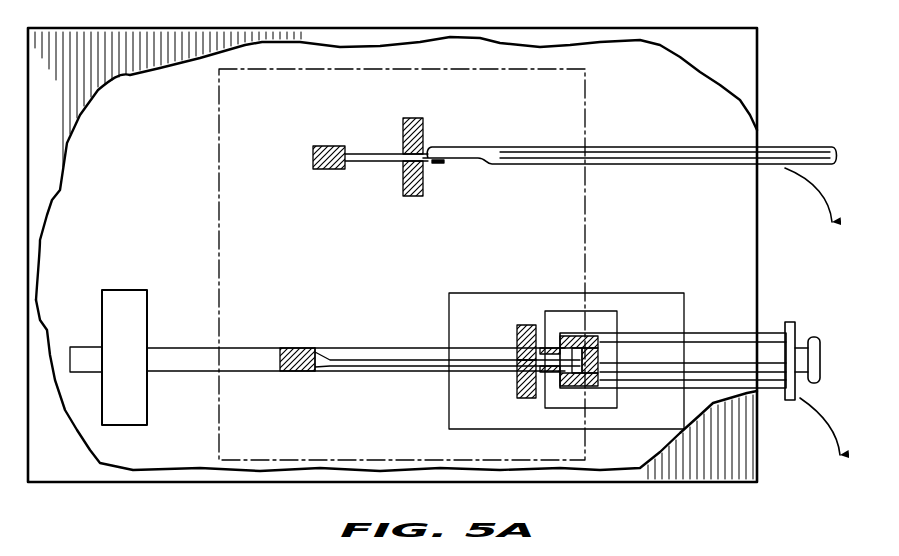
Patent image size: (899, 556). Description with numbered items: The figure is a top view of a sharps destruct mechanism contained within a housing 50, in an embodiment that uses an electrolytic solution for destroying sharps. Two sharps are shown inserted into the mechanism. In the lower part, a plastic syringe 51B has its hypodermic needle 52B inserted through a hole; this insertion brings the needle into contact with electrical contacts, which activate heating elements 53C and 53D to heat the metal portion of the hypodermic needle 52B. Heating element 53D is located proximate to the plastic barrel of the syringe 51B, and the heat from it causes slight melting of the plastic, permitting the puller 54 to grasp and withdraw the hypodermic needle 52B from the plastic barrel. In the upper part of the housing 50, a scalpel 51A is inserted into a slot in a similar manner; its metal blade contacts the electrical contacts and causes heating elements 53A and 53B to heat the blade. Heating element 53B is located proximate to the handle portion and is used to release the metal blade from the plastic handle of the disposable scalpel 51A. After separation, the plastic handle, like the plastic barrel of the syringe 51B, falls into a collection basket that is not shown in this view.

The housing 50 is at (771, 264).
The scalpel 51A is at (786, 147).
The plastic syringe 51B is at (820, 338).
The hypodermic needle 52B is at (386, 348).
The heating element 53A is at (392, 144).
The heating element 53B is at (392, 170).
The heating element 53C is at (509, 320).
The heating element 53D is at (509, 380).
The puller 54 is at (128, 427).